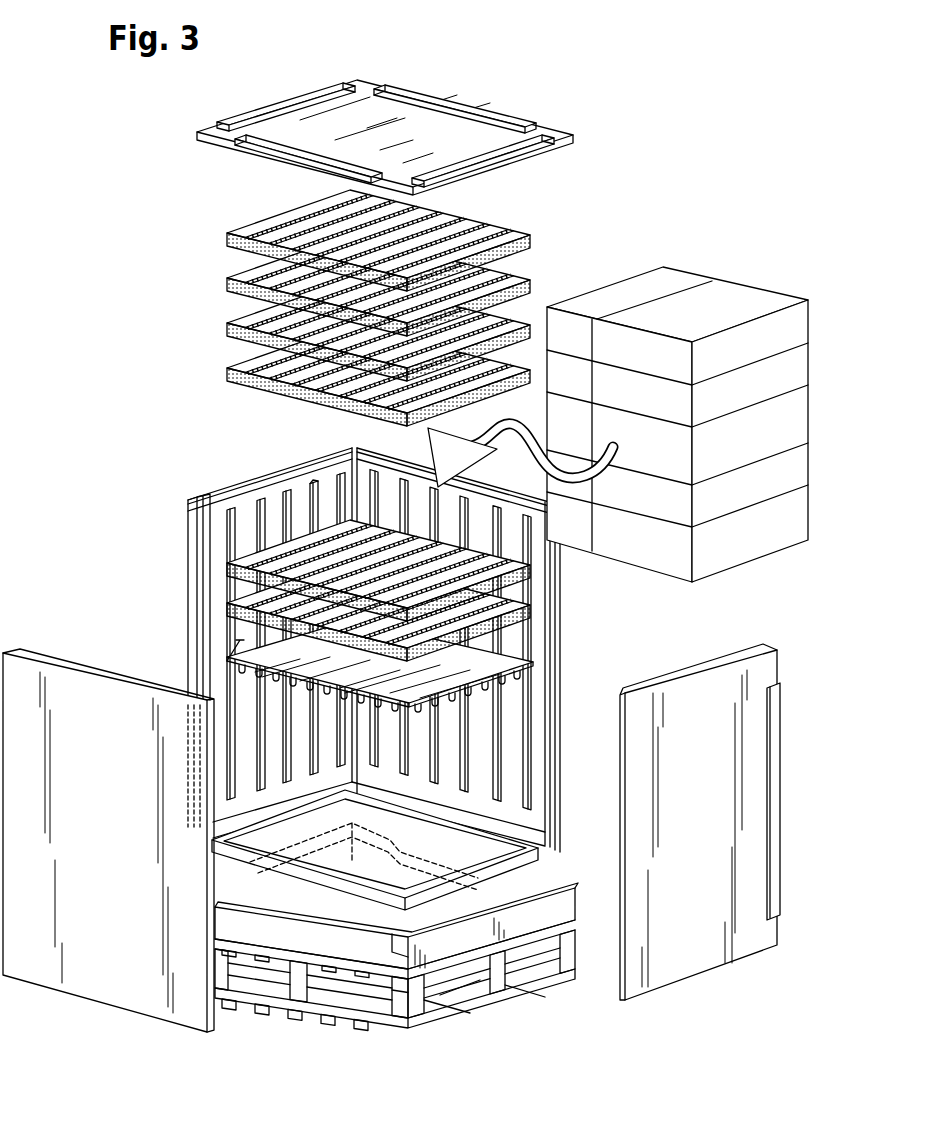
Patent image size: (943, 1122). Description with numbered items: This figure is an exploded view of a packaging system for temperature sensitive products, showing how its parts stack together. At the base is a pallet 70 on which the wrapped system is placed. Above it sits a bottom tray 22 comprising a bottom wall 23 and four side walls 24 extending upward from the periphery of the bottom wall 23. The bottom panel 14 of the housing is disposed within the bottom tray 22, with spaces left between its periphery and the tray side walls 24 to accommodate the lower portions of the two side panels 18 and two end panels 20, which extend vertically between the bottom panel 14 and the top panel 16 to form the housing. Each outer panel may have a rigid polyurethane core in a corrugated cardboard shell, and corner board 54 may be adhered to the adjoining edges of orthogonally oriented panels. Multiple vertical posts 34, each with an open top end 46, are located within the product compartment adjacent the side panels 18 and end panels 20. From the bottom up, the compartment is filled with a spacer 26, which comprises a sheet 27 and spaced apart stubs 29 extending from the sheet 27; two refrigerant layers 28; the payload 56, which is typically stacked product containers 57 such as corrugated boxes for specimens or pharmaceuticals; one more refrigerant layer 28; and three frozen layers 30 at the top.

The bottom panel 14 is at (525, 852).
The top panel 16 is at (470, 125).
The side panel 18 is at (378, 455).
The end panel 20 is at (276, 468).
The bottom tray 22 is at (522, 925).
The bottom wall 23 is at (311, 923).
The side wall 24 is at (568, 913).
The spacer 26 is at (530, 664).
The sheet 27 is at (240, 642).
The refrigerant layer 28 is at (525, 572).
The stub 29 is at (243, 672).
The frozen layer 30 is at (522, 320).
The vertical post 34 is at (228, 542).
The open top end 46 is at (314, 480).
The corner board 54 is at (418, 88).
The payload 56 is at (777, 258).
The product container 57 is at (803, 420).
The pallet 70 is at (395, 990).